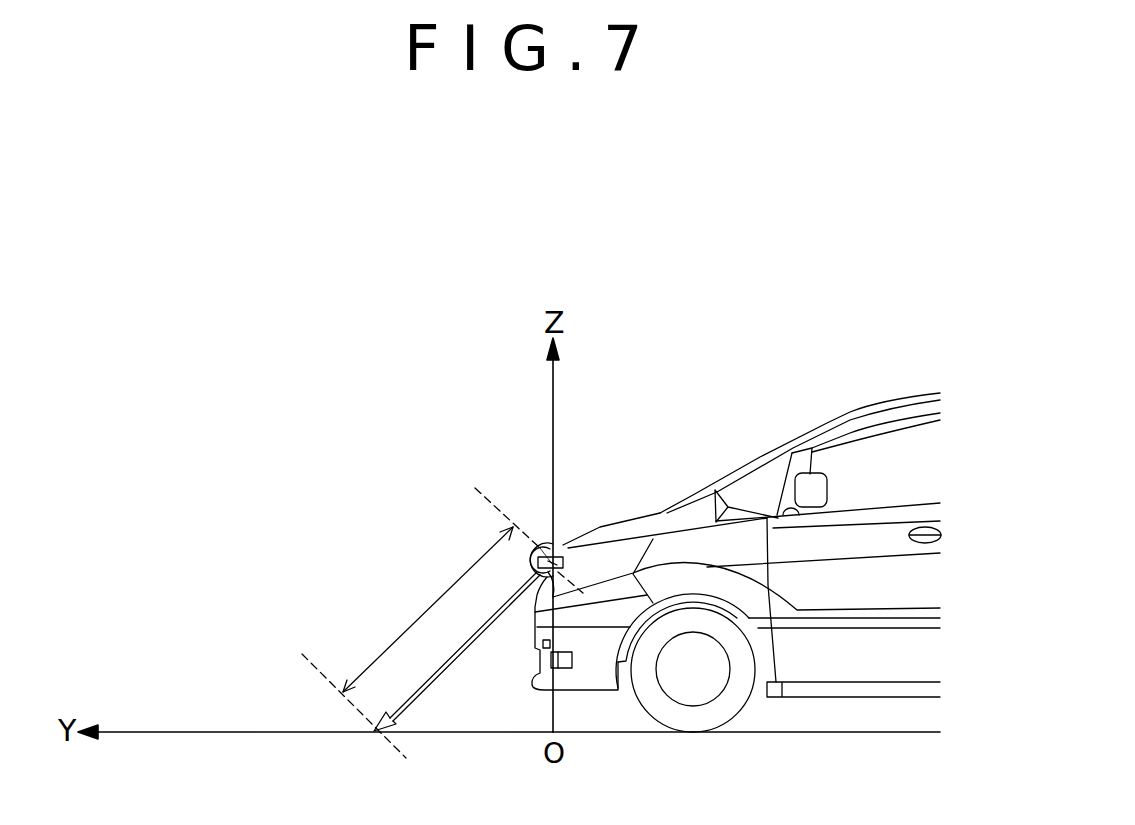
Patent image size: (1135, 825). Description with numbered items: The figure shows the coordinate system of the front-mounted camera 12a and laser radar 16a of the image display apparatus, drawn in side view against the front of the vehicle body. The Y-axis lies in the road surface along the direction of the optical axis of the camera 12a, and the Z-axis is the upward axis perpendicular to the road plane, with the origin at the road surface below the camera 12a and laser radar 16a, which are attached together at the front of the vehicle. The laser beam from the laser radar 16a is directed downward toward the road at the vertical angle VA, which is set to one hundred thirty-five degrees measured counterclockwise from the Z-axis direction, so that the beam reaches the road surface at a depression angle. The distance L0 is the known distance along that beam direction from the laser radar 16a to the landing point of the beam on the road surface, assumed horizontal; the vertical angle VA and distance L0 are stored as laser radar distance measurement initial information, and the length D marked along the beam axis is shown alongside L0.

The camera 12a is at (566, 540).
The laser radar 16a is at (601, 507).
The distance from camera to ground along optical axis D is at (423, 675).
The distance L0 is at (428, 609).
The vertical angle VA is at (540, 533).